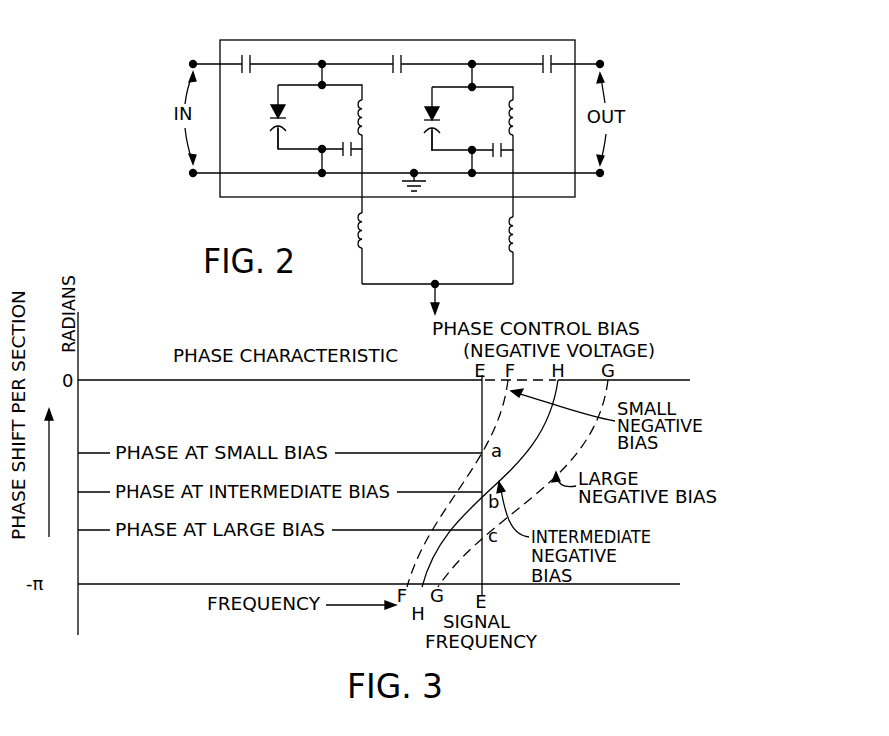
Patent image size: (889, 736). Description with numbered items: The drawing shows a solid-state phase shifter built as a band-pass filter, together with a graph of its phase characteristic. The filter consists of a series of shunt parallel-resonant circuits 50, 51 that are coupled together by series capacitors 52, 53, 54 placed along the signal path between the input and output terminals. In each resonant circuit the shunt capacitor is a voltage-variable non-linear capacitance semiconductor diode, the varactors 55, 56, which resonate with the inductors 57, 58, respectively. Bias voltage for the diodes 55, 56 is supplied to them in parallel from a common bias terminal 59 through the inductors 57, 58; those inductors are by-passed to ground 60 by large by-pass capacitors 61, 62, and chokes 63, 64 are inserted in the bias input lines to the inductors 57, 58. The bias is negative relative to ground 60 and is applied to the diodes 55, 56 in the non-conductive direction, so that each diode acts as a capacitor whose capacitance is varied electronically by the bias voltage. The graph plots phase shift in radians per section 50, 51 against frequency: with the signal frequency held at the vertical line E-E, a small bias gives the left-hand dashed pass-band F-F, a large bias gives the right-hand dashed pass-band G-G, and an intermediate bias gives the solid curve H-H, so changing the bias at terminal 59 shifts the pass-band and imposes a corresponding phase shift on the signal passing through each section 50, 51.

The shunt parallel-resonant circuit 50 is at (342, 95).
The shunt parallel-resonant circuit 51 is at (490, 97).
The series capacitor 52 is at (246, 54).
The series capacitor 53 is at (396, 53).
The series capacitor 54 is at (547, 54).
The varactor diode 55 is at (272, 117).
The varactor diode 56 is at (425, 118).
The inductor 57 is at (367, 107).
The inductor 58 is at (517, 122).
The common bias terminal 59 is at (437, 292).
The ground 60 is at (418, 188).
The by-pass capacitor 61 is at (343, 162).
The by-pass capacitor 62 is at (501, 160).
The choke 63 is at (357, 240).
The choke 64 is at (522, 232).